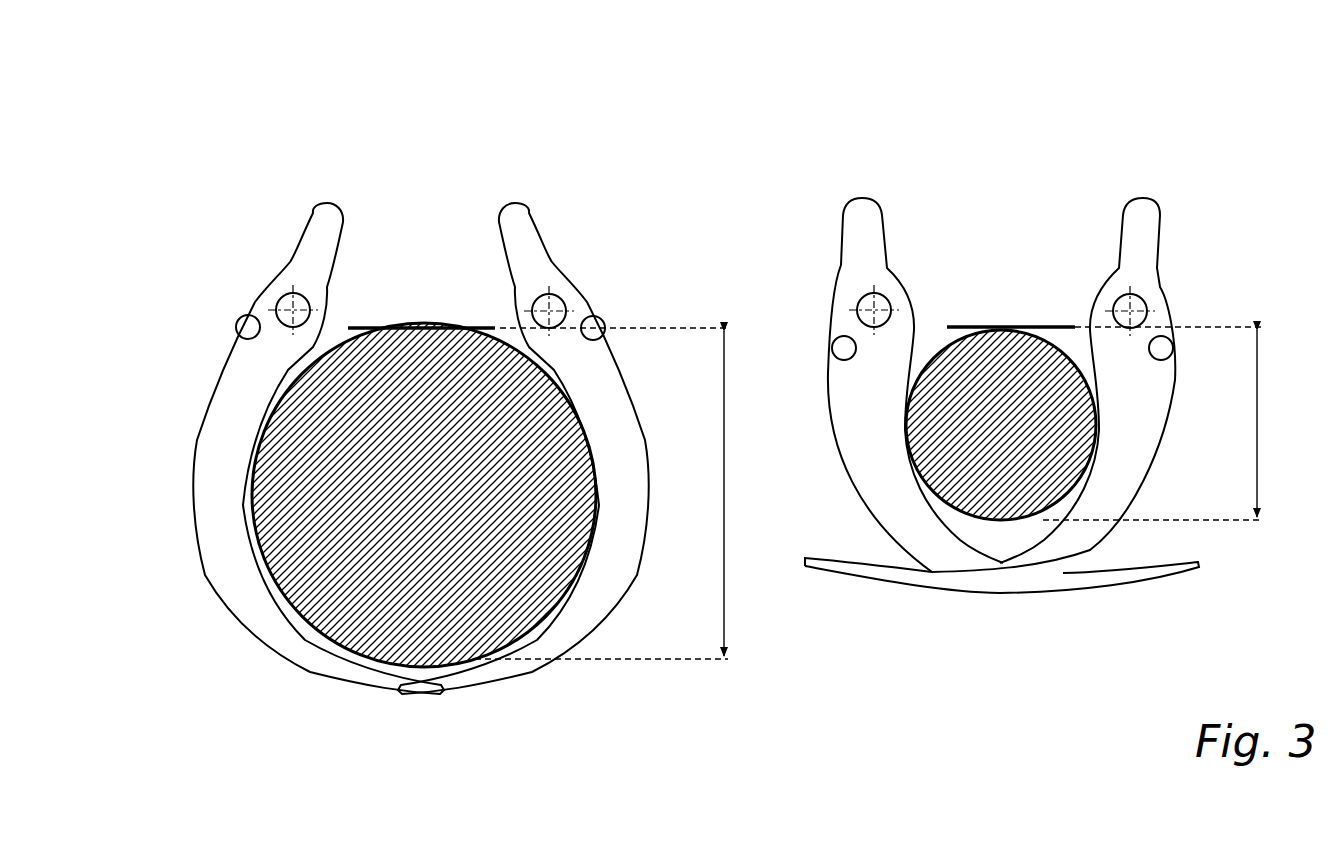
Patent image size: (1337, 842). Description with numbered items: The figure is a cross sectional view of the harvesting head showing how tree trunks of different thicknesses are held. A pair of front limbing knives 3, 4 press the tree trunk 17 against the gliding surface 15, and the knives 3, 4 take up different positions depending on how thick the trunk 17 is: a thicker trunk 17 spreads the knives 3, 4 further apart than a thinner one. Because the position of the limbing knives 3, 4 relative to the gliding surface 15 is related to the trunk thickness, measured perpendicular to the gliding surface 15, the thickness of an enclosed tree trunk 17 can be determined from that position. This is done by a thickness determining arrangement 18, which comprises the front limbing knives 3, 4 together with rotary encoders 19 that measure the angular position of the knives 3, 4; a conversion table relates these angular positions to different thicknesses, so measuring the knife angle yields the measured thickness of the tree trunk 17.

The front limbing knife 3 is at (515, 655).
The front limbing knife 4 is at (300, 632).
The gliding surface 15 is at (365, 327).
The tree trunk 17 is at (558, 435).
The thickness determining arrangement 18 is at (552, 116).
The rotary encoder 19 is at (248, 326).